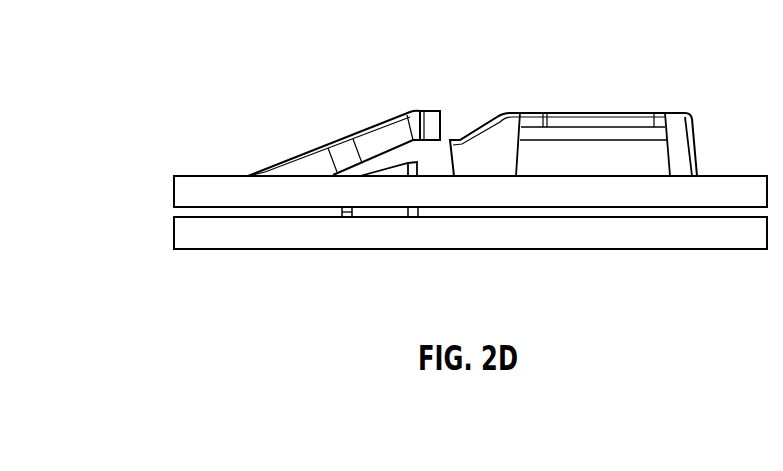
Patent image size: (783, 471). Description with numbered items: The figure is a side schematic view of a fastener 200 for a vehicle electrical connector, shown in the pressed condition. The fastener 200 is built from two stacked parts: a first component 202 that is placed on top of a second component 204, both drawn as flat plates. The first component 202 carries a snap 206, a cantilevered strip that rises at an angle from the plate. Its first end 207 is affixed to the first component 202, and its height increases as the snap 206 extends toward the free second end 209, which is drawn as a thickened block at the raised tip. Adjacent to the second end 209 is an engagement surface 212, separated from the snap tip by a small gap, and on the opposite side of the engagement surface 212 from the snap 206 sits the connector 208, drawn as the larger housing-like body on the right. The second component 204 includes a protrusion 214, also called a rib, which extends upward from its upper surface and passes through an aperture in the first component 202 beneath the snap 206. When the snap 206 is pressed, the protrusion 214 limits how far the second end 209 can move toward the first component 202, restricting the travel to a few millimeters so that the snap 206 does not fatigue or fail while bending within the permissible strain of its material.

The fastener 200 is at (209, 83).
The first component 202 is at (175, 192).
The second component 204 is at (175, 233).
The snap 206 is at (315, 99).
The first end 207 is at (265, 171).
The connector 208 is at (571, 111).
The second end 209 is at (415, 110).
The engagement surface 212 is at (488, 127).
The protrusion 214 is at (390, 160).